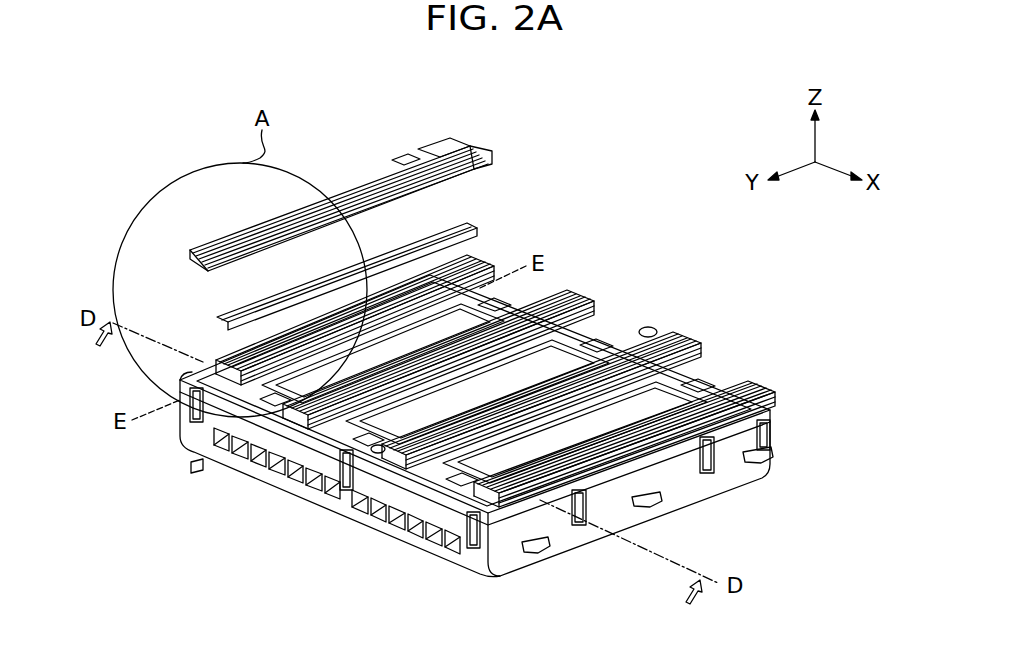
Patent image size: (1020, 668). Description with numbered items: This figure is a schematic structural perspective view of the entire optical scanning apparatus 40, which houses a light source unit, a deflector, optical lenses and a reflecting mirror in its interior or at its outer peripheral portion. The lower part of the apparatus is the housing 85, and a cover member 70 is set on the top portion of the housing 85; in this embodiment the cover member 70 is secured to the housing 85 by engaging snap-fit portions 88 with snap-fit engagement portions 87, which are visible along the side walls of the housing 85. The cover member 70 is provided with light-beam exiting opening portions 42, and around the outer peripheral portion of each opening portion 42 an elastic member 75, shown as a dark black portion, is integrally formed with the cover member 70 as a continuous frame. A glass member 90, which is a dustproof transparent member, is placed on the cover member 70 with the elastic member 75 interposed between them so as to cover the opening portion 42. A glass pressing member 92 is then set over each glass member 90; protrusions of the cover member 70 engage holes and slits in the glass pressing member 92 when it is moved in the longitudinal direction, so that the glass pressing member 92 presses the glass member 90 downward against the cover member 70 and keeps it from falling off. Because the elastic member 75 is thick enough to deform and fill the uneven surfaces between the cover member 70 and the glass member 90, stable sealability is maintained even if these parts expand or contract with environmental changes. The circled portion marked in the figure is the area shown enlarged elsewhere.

The optical scanning apparatus 40 is at (786, 434).
The light-beam exiting opening portion 42 is at (442, 282).
The cover member 70 is at (648, 328).
The elastic member 75 is at (180, 380).
The housing 85 is at (375, 520).
The snap-fit engagement portion 87 is at (190, 417).
The snap-fit portion 88 is at (197, 452).
The glass member 90 is at (455, 226).
The glass pressing member 92 is at (485, 152).